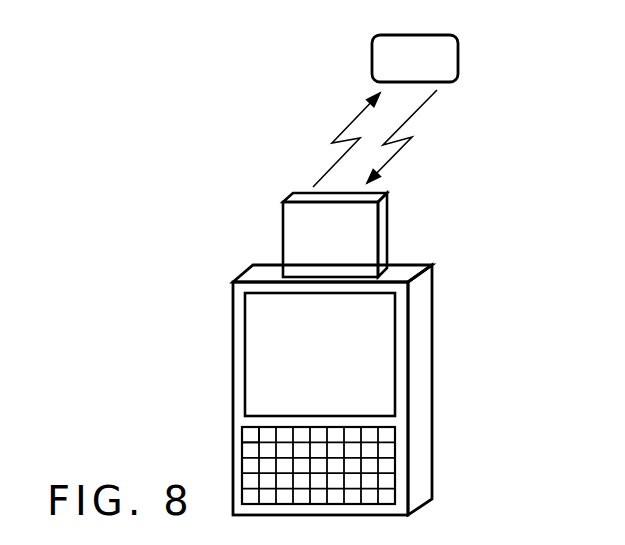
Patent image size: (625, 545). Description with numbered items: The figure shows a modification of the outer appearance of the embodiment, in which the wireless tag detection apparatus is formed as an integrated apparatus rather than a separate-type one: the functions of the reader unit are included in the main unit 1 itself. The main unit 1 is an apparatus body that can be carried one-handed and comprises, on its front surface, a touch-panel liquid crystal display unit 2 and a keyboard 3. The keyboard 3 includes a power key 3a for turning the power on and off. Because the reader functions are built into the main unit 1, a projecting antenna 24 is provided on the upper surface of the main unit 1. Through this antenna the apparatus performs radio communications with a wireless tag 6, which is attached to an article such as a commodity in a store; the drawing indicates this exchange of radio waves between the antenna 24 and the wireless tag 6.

The main unit 1 is at (418, 264).
The touch-panel liquid crystal display unit 2 is at (245, 334).
The keyboard 3 is at (242, 462).
The power key 3a is at (253, 433).
The wireless tag 6 is at (458, 57).
The projecting antenna 24 is at (283, 222).